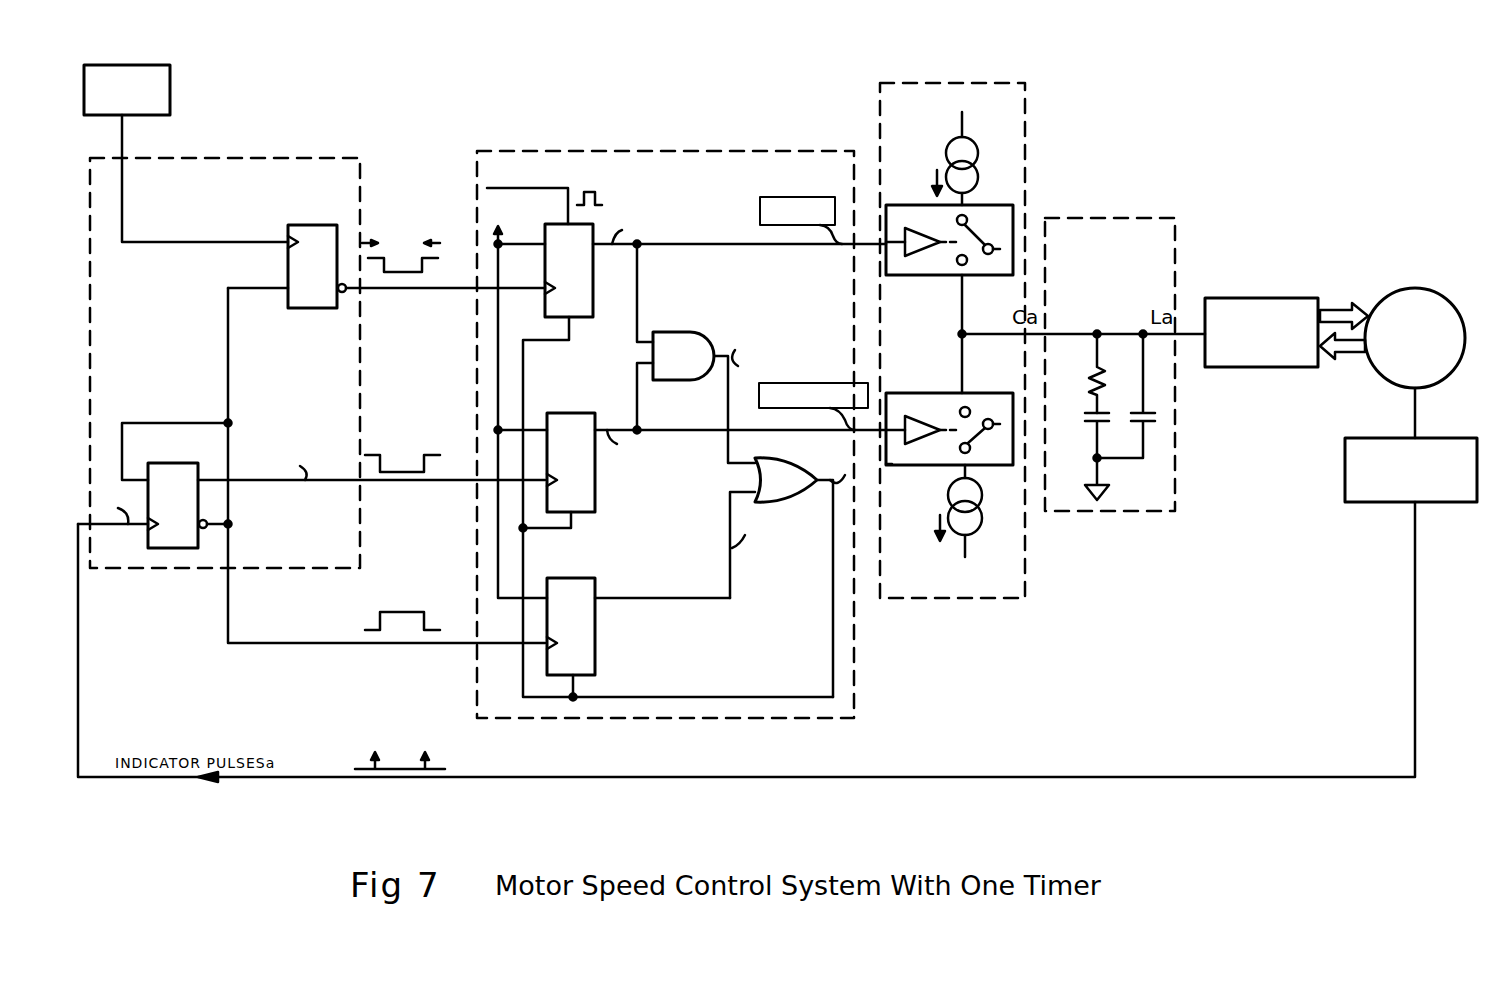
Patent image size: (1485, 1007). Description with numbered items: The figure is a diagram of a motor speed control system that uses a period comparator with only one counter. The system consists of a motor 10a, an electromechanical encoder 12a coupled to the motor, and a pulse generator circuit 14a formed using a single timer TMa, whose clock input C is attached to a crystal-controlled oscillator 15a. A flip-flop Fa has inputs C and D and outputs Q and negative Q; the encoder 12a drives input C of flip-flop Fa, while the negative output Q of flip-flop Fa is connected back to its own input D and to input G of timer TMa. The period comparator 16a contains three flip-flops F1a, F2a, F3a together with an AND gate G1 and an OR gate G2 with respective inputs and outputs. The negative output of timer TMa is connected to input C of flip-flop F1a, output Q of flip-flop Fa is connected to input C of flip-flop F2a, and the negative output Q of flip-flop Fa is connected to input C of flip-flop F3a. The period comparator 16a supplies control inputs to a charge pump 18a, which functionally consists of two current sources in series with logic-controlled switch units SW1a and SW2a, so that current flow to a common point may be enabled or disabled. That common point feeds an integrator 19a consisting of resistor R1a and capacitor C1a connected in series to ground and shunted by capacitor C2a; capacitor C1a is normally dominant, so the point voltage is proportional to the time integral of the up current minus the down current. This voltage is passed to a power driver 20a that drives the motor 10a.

The motor 10a is at (1415, 288).
The electromechanical encoder 12a is at (1360, 438).
The pulse generator circuit 14a is at (212, 158).
The crystal-controlled oscillator 15a is at (148, 65).
The period comparator 16a is at (540, 151).
The charge pump 18a is at (985, 83).
The integrator 19a is at (1105, 218).
The power driver 20a is at (1245, 298).
The timer TMa is at (290, 225).
The flip-flop Fa is at (162, 463).
The flip-flop F1a is at (593, 318).
The flip-flop F2a is at (595, 502).
The flip-flop F3a is at (595, 632).
The AND gate G1 is at (683, 356).
The OR gate G2 is at (786, 480).
The switch unit SW1a is at (972, 205).
The switch unit SW2a is at (938, 393).
The resistor R1a is at (1079, 373).
The capacitor C1a is at (1078, 432).
The capacitor C2a is at (1146, 396).